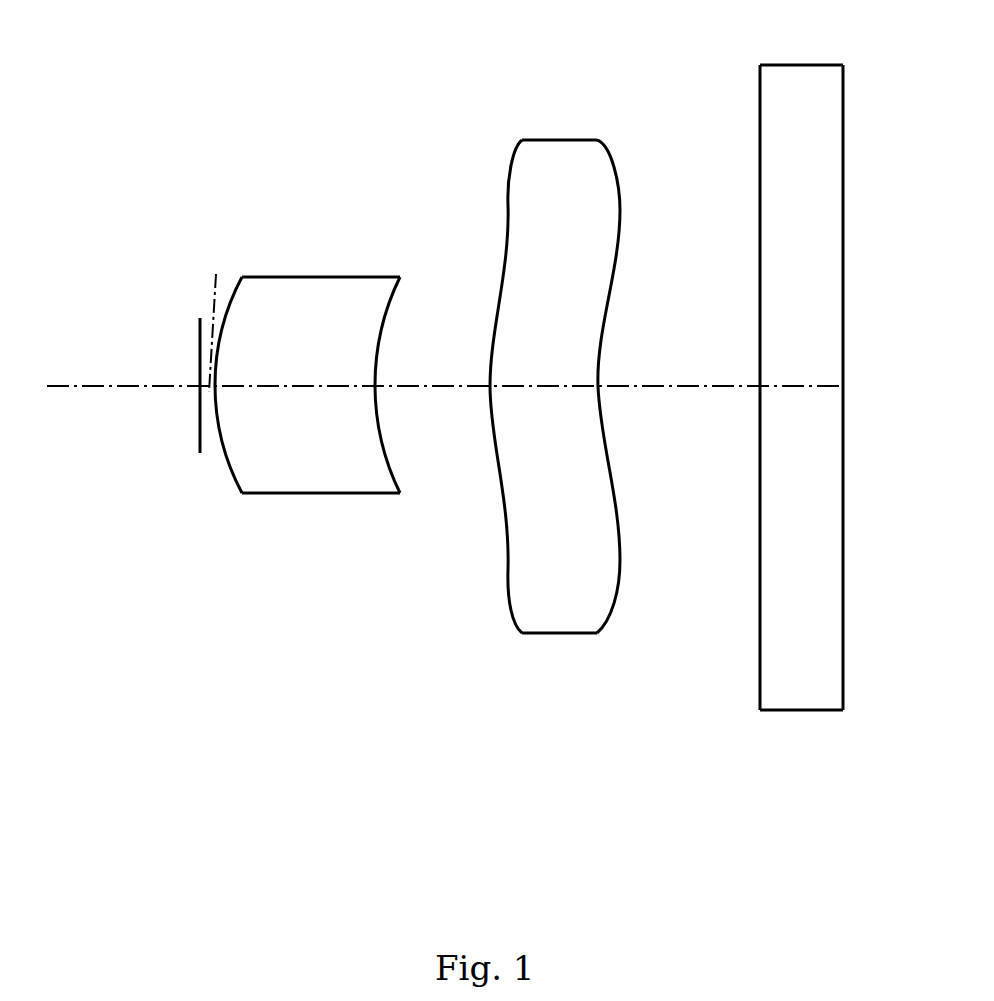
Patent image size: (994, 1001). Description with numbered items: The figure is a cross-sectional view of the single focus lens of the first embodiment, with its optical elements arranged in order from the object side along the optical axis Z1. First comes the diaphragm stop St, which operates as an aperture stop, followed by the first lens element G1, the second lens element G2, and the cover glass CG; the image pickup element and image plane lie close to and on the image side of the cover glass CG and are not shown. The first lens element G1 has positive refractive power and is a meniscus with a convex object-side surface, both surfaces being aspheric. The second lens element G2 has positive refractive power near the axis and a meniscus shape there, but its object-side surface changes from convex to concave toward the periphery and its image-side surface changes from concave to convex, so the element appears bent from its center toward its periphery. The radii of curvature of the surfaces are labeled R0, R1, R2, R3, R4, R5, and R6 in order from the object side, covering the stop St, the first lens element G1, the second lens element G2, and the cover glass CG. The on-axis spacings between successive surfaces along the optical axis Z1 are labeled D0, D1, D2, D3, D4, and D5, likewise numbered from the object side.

The optical axis Z1 is at (72, 386).
The diaphragm stop St is at (199, 337).
The on-axis surface spacing D0 is at (213, 314).
The first lens element G1 is at (311, 291).
The second lens element G2 is at (560, 153).
The cover glass CG is at (808, 79).
The on-axis surface spacing D1 is at (282, 365).
The on-axis surface spacing D2 is at (437, 365).
The on-axis surface spacing D3 is at (547, 365).
The on-axis surface spacing D4 is at (679, 365).
The on-axis surface spacing D5 is at (804, 365).
The radius of curvature R0 is at (198, 440).
The radius of curvature R1 is at (233, 481).
The radius of curvature R2 is at (381, 455).
The radius of curvature R3 is at (508, 566).
The radius of curvature R4 is at (620, 548).
The radius of curvature R5 is at (759, 621).
The radius of curvature R6 is at (845, 605).